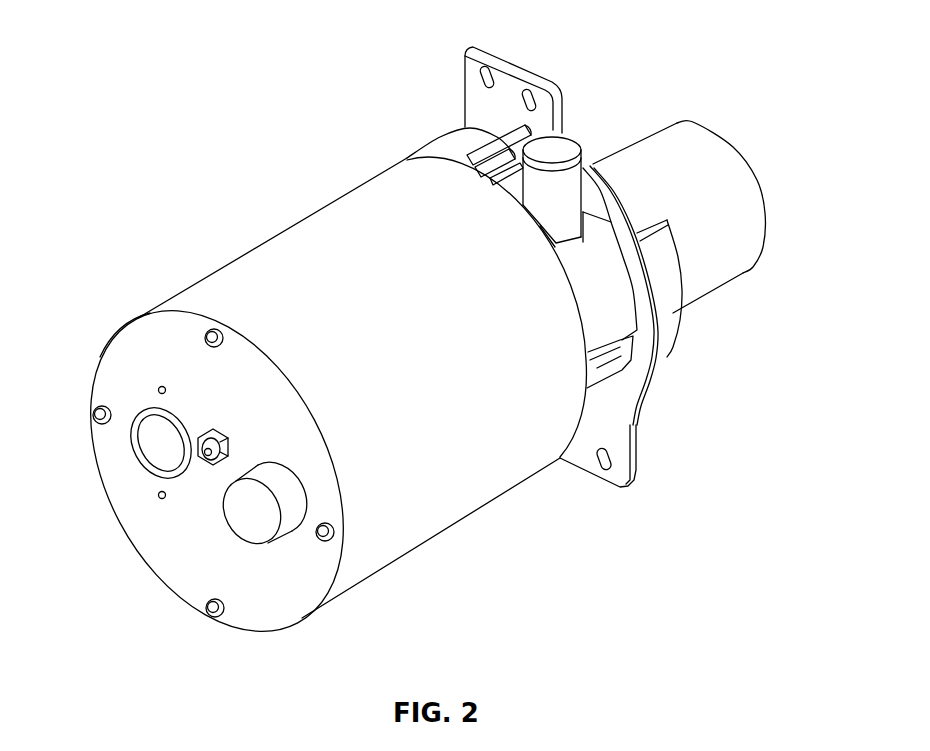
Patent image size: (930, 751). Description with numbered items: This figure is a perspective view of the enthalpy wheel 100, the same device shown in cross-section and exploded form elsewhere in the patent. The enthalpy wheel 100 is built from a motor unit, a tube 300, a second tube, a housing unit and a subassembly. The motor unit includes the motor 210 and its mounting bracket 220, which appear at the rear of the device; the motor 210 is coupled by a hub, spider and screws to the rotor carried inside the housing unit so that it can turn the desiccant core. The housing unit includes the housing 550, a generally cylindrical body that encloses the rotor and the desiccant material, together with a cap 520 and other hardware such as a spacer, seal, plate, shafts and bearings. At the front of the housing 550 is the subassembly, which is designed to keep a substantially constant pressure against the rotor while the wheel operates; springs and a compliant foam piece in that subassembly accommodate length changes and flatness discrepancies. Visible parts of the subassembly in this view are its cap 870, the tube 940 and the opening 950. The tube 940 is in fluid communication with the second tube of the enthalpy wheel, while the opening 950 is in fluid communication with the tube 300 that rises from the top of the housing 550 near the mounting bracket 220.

The enthalpy wheel 100 is at (742, 406).
The motor 210 is at (703, 137).
The mounting bracket 220 is at (508, 68).
The tube 300 is at (562, 190).
The cap 520 is at (587, 430).
The housing 550 is at (478, 485).
The cap 870 is at (257, 605).
The tube 940 is at (285, 517).
The opening 950 is at (150, 437).